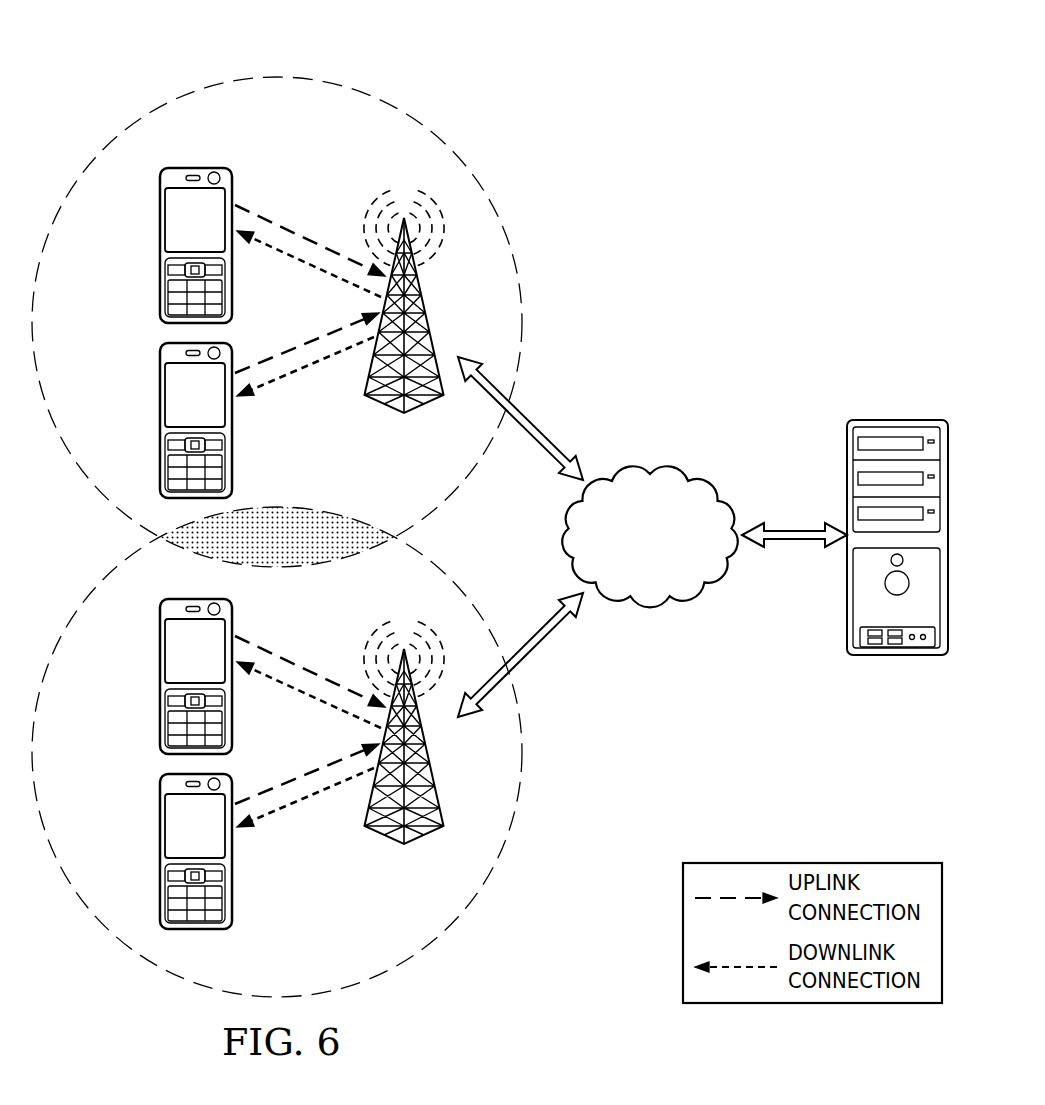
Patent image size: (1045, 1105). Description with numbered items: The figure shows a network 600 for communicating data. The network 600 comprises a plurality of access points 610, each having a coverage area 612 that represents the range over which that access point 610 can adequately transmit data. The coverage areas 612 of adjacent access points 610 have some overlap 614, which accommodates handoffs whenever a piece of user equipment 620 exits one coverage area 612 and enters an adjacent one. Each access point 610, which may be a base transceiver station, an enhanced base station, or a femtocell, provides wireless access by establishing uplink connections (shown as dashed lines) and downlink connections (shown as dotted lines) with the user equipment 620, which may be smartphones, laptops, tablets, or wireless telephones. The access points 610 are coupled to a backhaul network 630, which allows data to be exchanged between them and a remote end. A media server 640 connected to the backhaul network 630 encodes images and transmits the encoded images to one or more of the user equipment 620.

The network 600 is at (728, 69).
The access point 610 is at (386, 400).
The coverage area 612 is at (143, 101).
The overlap 614 is at (293, 560).
The user equipment 620 is at (160, 243).
The backhaul network 630 is at (676, 466).
The media server 640 is at (898, 419).